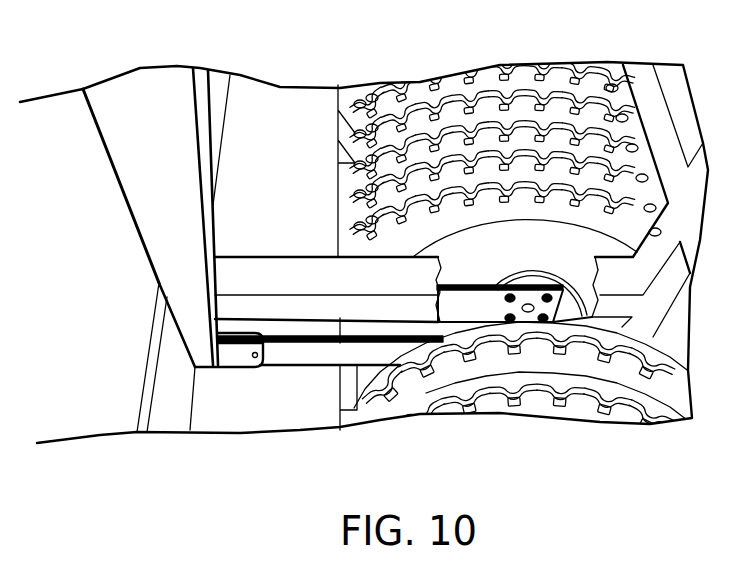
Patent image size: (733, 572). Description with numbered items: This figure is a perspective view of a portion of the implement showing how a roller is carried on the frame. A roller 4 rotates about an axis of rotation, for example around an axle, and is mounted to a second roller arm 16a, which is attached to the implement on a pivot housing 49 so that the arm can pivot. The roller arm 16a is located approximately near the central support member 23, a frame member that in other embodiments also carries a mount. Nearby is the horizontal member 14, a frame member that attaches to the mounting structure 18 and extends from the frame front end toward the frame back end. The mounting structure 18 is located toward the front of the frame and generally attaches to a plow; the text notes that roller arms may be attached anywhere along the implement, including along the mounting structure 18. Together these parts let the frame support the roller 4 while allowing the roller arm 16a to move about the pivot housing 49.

The roller 4 is at (557, 68).
The horizontal member 14 is at (264, 258).
The second roller arm 16a is at (302, 356).
The mounting structure 18 is at (125, 359).
The central support member 23 is at (113, 170).
The pivot housing 49 is at (242, 366).